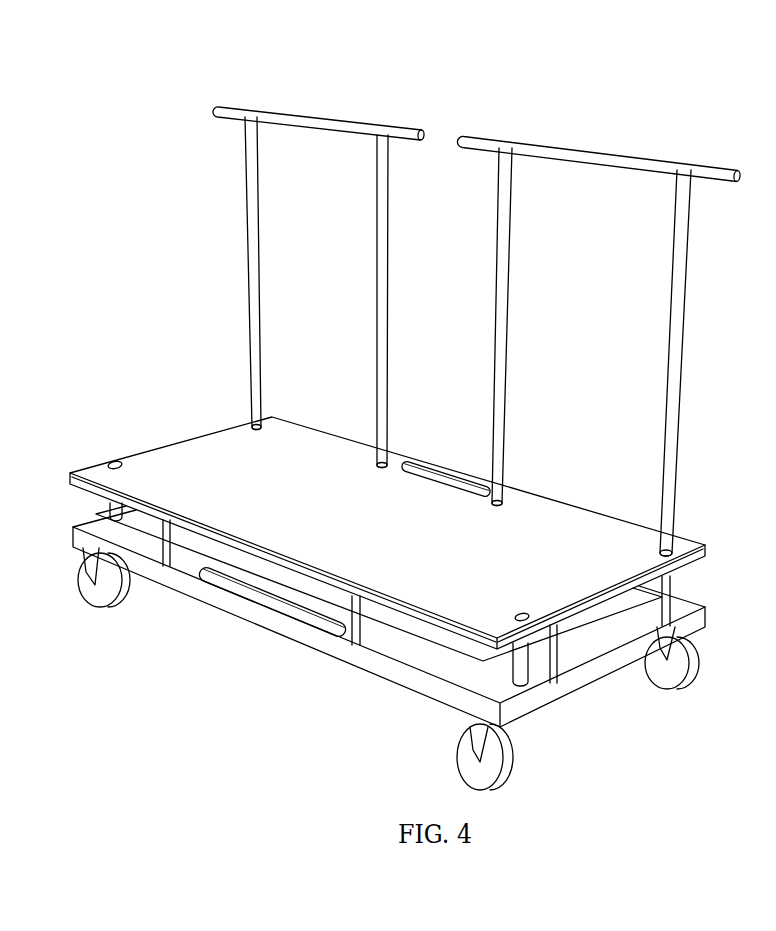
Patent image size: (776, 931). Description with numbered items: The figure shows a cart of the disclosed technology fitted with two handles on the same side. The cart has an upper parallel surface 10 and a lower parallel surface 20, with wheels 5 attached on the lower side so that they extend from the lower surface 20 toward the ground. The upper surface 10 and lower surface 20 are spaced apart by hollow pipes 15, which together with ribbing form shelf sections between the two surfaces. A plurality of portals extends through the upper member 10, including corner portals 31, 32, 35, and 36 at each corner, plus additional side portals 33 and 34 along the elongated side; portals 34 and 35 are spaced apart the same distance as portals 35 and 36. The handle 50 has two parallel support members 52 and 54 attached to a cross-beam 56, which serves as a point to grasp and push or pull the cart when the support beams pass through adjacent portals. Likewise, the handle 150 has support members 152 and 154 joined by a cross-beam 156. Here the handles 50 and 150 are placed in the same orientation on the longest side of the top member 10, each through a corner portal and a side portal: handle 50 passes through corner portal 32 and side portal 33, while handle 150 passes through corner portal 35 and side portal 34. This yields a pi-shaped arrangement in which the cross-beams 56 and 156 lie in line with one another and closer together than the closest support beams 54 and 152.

The wheels 5 is at (103, 590).
The upper parallel surface 10 is at (197, 462).
The pipes 15 is at (110, 510).
The lower parallel surface 20 is at (382, 673).
The corner portal 31 is at (108, 462).
The corner portal 32 is at (252, 422).
The side portal 33 is at (384, 459).
The side portal 34 is at (501, 498).
The corner portal 35 is at (673, 554).
The corner portal 36 is at (530, 622).
The handle 50 is at (310, 249).
The support member 52 is at (252, 257).
The support member 54 is at (380, 283).
The cross-beam 56 is at (313, 122).
The handle 150 is at (592, 308).
The support member 152 is at (500, 303).
The support member 154 is at (672, 310).
The cross-beam 156 is at (608, 155).